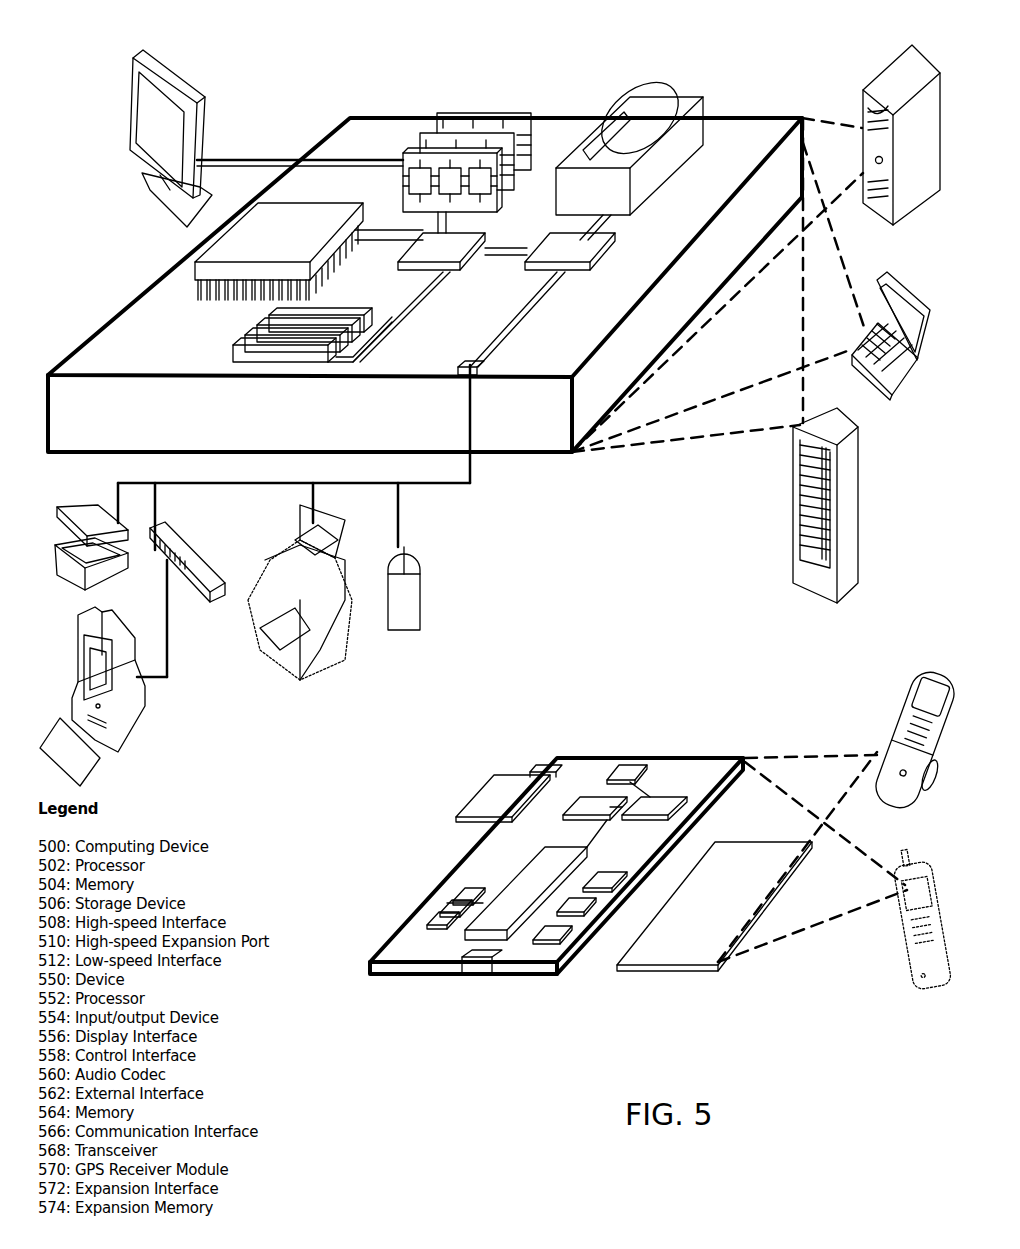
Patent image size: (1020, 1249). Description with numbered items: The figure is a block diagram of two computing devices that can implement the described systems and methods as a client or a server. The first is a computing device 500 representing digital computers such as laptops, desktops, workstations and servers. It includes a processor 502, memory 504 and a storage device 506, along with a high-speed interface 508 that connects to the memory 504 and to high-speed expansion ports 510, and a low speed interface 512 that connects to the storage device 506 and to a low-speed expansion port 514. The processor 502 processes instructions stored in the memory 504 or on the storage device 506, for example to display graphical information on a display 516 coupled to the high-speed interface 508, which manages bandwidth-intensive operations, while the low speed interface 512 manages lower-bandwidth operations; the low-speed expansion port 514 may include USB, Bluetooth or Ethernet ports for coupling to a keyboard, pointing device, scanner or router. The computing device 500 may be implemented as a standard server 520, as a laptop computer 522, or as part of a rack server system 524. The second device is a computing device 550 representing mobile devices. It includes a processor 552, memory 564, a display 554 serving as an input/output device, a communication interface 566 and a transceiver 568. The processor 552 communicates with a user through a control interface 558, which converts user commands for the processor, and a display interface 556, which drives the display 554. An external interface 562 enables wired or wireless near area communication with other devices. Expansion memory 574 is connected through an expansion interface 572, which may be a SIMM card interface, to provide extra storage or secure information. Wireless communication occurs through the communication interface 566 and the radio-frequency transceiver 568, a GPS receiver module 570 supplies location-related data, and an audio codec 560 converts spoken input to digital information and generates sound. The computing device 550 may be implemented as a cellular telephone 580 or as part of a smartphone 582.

The computing device 500 is at (297, 74).
The processor 502 is at (195, 266).
The memory 504 is at (450, 110).
The storage device 506 is at (631, 91).
The high-speed interface 508 is at (420, 245).
The high-speed expansion ports 510 is at (258, 328).
The low-speed interface 512 is at (564, 250).
The low-speed expansion port 514 is at (480, 377).
The display 516 is at (140, 58).
The standard server 520 is at (871, 100).
The laptop computer 522 is at (897, 282).
The rack server system 524 is at (798, 537).
The computing device 550 is at (550, 727).
The processor 552 is at (503, 959).
The display 554 is at (717, 967).
The display interface 556 is at (562, 958).
The control interface 558 is at (593, 926).
The audio codec 560 is at (607, 897).
The external interface 562 is at (471, 964).
The memory 564 is at (451, 908).
The communication interface 566 is at (596, 803).
The transceiver 568 is at (650, 800).
The GPS receiver module 570 is at (638, 760).
The expansion interface 572 is at (544, 772).
The expansion memory 574 is at (492, 776).
The cellular telephone 580 is at (934, 680).
The smartphone 582 is at (919, 855).